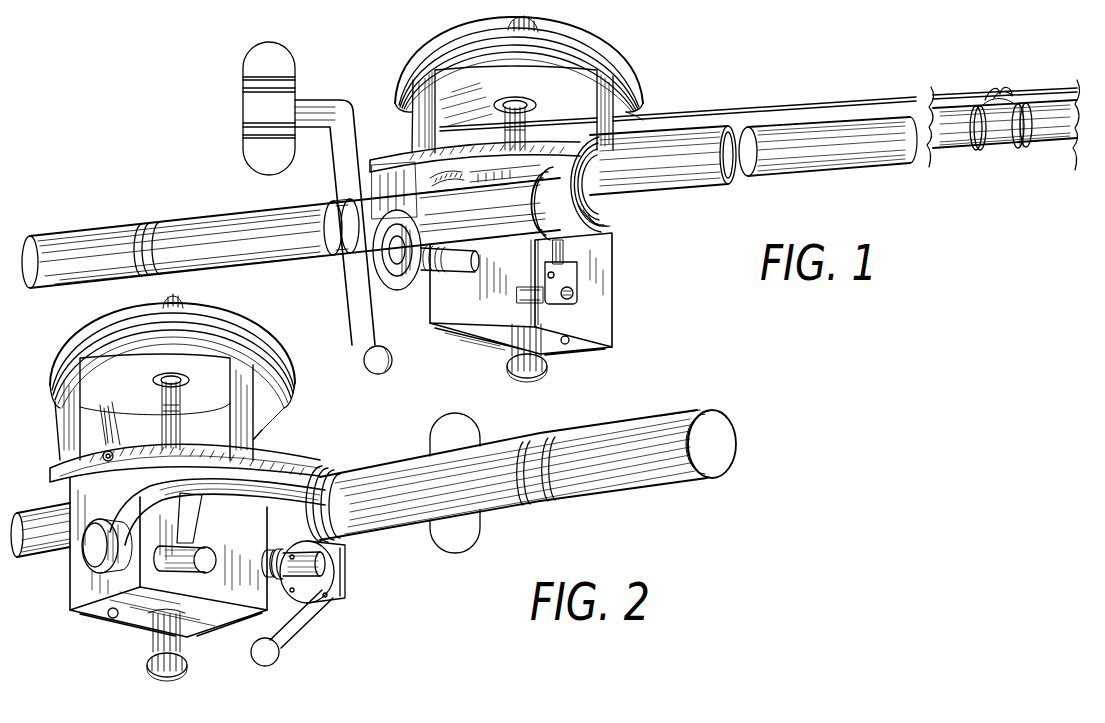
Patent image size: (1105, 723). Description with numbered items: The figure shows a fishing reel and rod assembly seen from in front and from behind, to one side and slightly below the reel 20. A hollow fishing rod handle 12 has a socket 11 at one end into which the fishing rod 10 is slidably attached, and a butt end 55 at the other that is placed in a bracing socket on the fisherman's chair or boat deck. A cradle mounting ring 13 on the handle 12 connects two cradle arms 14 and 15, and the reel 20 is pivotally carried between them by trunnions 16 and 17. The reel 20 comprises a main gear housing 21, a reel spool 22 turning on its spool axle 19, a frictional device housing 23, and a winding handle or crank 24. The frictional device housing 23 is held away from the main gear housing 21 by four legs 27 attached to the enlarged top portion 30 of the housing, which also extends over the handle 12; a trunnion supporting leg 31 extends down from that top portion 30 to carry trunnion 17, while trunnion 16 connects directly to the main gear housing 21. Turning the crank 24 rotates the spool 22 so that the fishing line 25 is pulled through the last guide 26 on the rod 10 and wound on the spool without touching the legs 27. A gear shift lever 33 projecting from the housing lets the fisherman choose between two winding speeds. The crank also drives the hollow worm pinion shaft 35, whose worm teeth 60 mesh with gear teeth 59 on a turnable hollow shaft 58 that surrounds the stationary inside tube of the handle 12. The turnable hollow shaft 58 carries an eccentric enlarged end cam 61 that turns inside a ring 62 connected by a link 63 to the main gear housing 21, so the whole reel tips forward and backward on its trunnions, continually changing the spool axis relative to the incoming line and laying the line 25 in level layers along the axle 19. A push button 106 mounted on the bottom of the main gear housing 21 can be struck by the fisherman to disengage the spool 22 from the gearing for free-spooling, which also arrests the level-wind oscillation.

In FIG. 1, the fishing rod 10 is at (884, 163).
In FIG. 1, the socket 11 is at (713, 180).
In FIG. 2, the socket 11 is at (34, 512).
In FIG. 1, the fishing rod handle 12 is at (78, 240).
In FIG. 2, the fishing rod handle 12 is at (616, 492).
In FIG. 2, the cradle mounting ring 13 is at (330, 478).
In FIG. 1, the cradle arm 14 is at (570, 188).
In FIG. 2, the cradle arm 14 is at (285, 478).
In FIG. 1, the cradle arm 15 is at (337, 248).
In FIG. 2, the trunnion 16 is at (92, 550).
In FIG. 1, the trunnion 17 is at (392, 312).
In FIG. 1, the spool axle 19 is at (525, 141).
In FIG. 2, the spool axle 19 is at (177, 430).
In FIG. 1, the fishing reel 20 is at (612, 303).
In FIG. 2, the fishing reel 20 is at (90, 612).
In FIG. 1, the main gear housing 21 is at (612, 327).
In FIG. 2, the main gear housing 21 is at (131, 620).
In FIG. 1, the reel spool 22 is at (643, 105).
In FIG. 2, the reel spool 22 is at (290, 393).
In FIG. 1, the frictional device housing 23 is at (605, 72).
In FIG. 2, the frictional device housing 23 is at (280, 352).
In FIG. 1, the winding handle or crank 24 is at (252, 58).
In FIG. 2, the winding handle or crank 24 is at (480, 437).
In FIG. 1, the fishing line 25 is at (762, 108).
In FIG. 1, the last guide 26 is at (1003, 92).
In FIG. 1, the legs 27 is at (418, 116).
In FIG. 2, the legs 27 is at (66, 418).
In FIG. 1, the top portion of main gear housing 30 is at (400, 158).
In FIG. 2, the top portion of main gear housing 30 is at (52, 468).
In FIG. 1, the trunnion supporting leg 31 is at (403, 290).
In FIG. 2, the trunnion supporting leg 31 is at (345, 590).
In FIG. 2, the gear shift lever 33 is at (192, 540).
In FIG. 1, the worm pinion shaft 35 is at (470, 270).
In FIG. 2, the worm pinion shaft 35 is at (325, 597).
In FIG. 2, the butt end 55 is at (664, 413).
In FIG. 1, the turnable hollow shaft 58 is at (497, 248).
In FIG. 2, the turnable hollow shaft 58 is at (270, 524).
In FIG. 1, the gear teeth 59 is at (440, 185).
In FIG. 2, the gear teeth 59 is at (268, 562).
In FIG. 1, the worm teeth 60 is at (405, 280).
In FIG. 2, the worm teeth 60 is at (272, 579).
In FIG. 1, the enlarged end cam 61 is at (612, 248).
In FIG. 1, the ring 62 is at (577, 251).
In FIG. 1, the link 63 is at (578, 284).
In FIG. 1, the push button 106 is at (548, 368).
In FIG. 2, the push button 106 is at (163, 676).